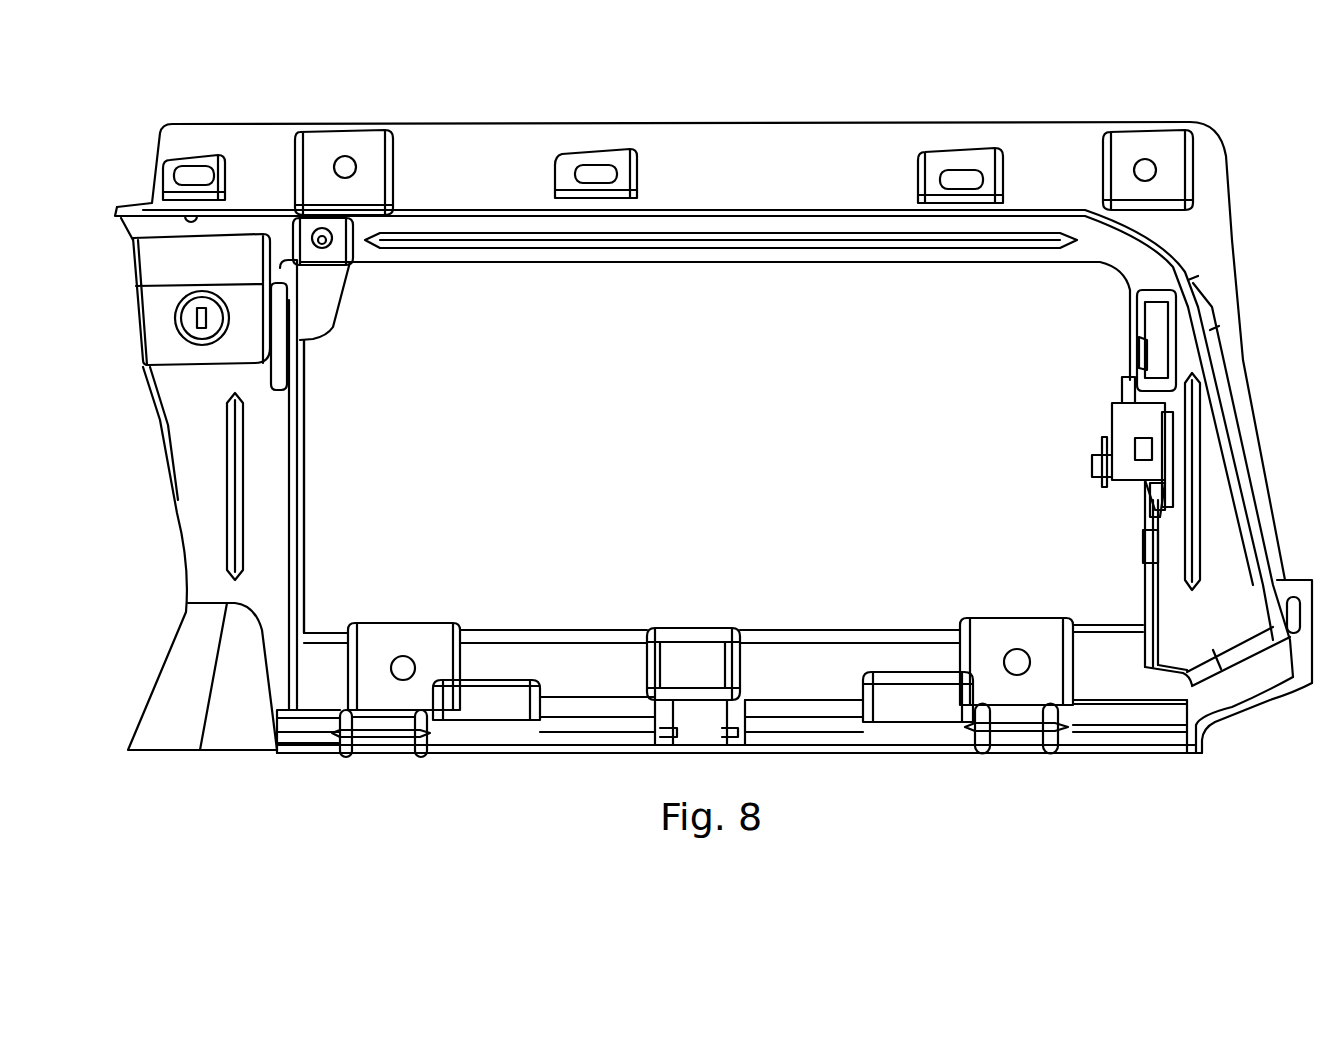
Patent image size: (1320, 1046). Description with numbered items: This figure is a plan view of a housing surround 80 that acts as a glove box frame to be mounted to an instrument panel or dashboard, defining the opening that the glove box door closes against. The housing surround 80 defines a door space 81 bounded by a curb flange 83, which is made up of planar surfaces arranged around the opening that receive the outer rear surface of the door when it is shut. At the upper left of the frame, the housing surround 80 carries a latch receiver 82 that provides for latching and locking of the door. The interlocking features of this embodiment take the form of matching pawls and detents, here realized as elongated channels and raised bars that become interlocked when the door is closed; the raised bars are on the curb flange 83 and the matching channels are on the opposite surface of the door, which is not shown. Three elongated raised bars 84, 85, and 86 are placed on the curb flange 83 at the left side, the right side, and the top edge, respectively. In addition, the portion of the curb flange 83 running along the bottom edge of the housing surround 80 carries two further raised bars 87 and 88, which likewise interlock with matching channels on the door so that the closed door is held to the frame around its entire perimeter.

The housing surround 80 is at (907, 106).
The door space 81 is at (715, 447).
The latch receiver 82 is at (156, 324).
The curb flange 83 is at (753, 230).
The raised bar 84 is at (237, 452).
The raised bar 85 is at (1200, 545).
The raised bar 86 is at (678, 240).
The raised bar 87 is at (389, 742).
The raised bar 88 is at (1023, 742).